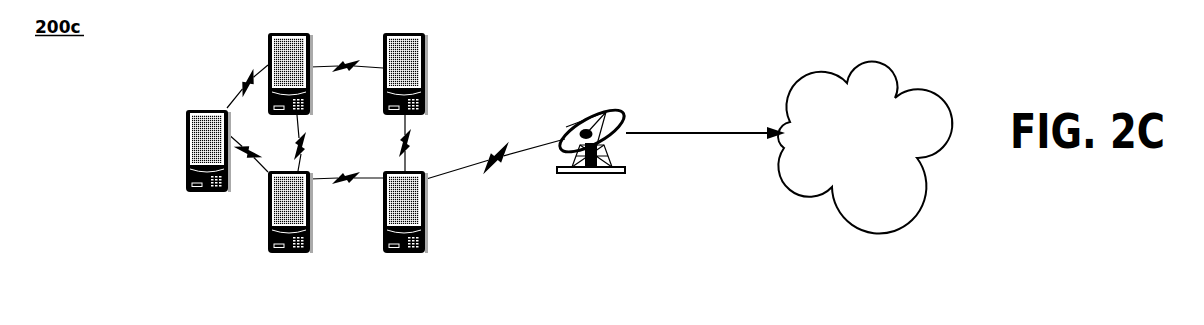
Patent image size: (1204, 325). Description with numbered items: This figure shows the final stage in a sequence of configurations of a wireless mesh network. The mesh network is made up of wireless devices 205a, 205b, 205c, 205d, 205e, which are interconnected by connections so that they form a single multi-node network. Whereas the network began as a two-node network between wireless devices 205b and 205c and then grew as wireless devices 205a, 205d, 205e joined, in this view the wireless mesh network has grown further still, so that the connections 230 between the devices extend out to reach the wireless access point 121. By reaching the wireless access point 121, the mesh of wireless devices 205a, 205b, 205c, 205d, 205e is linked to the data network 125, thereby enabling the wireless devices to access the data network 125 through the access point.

The wireless device 205a is at (186, 143).
The wireless device 205b is at (268, 59).
The wireless device 205c is at (268, 202).
The wireless device 205d is at (425, 65).
The wireless device 205e is at (425, 202).
The wireless communication links 230 is at (498, 154).
The wireless access point 121 is at (588, 174).
The data network 125 is at (795, 80).